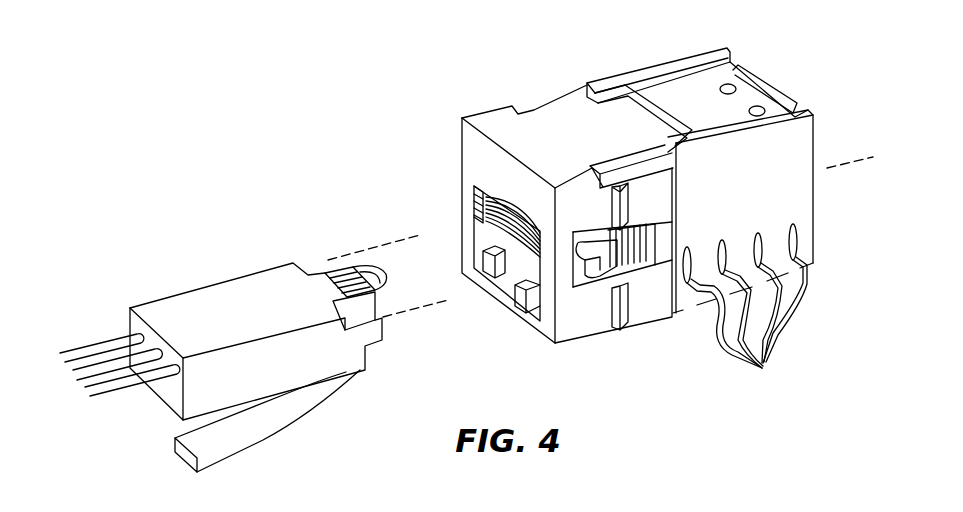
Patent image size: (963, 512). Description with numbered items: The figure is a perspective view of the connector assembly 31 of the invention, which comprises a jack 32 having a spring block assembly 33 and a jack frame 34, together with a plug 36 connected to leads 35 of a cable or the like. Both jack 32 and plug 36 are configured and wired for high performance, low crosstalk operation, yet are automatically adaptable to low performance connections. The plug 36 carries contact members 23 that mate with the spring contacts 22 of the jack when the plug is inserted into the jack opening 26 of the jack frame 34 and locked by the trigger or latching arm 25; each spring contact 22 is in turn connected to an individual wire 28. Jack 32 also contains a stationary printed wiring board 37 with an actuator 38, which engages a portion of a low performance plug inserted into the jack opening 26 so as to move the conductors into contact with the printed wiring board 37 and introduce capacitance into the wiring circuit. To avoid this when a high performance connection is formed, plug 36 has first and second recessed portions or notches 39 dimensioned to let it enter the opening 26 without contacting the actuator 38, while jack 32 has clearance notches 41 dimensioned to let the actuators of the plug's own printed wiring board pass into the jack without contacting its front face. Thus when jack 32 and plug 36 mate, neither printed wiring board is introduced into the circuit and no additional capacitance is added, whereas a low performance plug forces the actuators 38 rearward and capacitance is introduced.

The connector assembly 31 is at (334, 45).
The jack 32 is at (604, 58).
The spring block assembly 33 is at (693, 60).
The jack frame 34 is at (540, 112).
The leads 35 is at (165, 368).
The plug 36 is at (215, 297).
The printed wiring board 37 is at (482, 202).
The actuator 38 is at (490, 210).
The recessed portions or notches 39 is at (322, 273).
The clearance notches 41 is at (487, 270).
The spring contacts 22 is at (510, 285).
The contact members 23 is at (373, 267).
The trigger or latching arm 25 is at (230, 440).
The jack opening 26 is at (522, 270).
The wire 28 is at (745, 308).